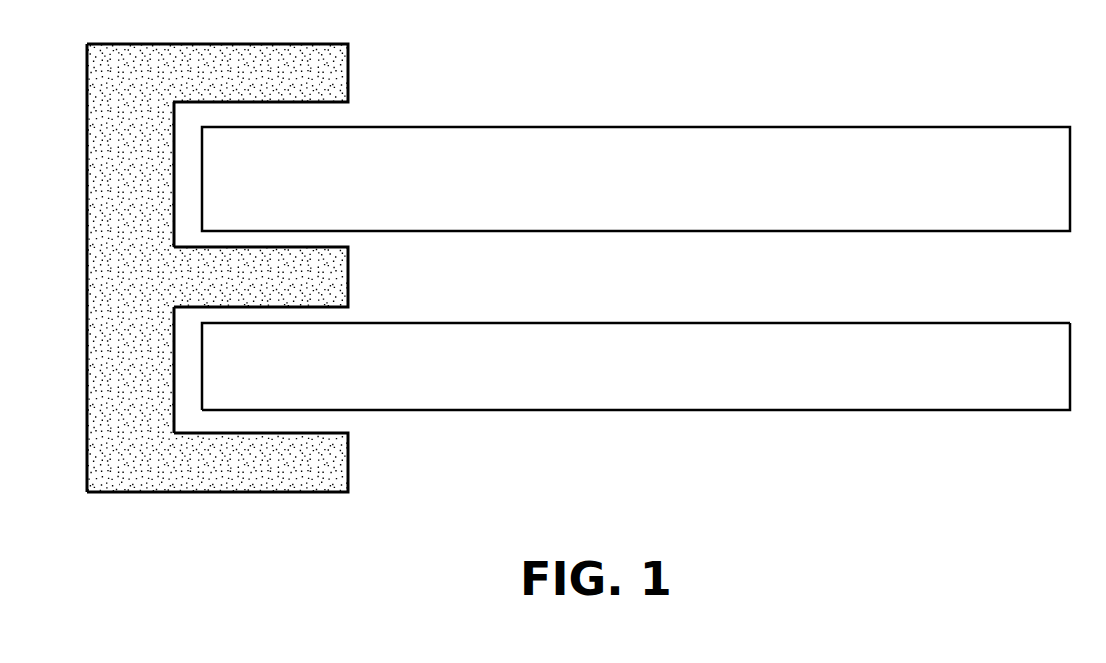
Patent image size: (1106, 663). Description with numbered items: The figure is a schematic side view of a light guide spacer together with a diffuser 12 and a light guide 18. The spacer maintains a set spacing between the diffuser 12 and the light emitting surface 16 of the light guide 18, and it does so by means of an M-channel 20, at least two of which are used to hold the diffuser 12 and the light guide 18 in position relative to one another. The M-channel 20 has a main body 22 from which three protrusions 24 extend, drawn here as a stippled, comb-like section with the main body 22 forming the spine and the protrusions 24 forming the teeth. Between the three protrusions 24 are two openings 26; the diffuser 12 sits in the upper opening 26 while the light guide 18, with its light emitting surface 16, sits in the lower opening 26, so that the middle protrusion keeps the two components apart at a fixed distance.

The M-channel 20 is at (80, 205).
The main body 22 is at (128, 256).
The protrusions 24 is at (320, 73).
The openings 26 is at (188, 180).
The diffuser 12 is at (842, 172).
The light emitting surface 16 is at (681, 322).
The light guide 18 is at (812, 362).